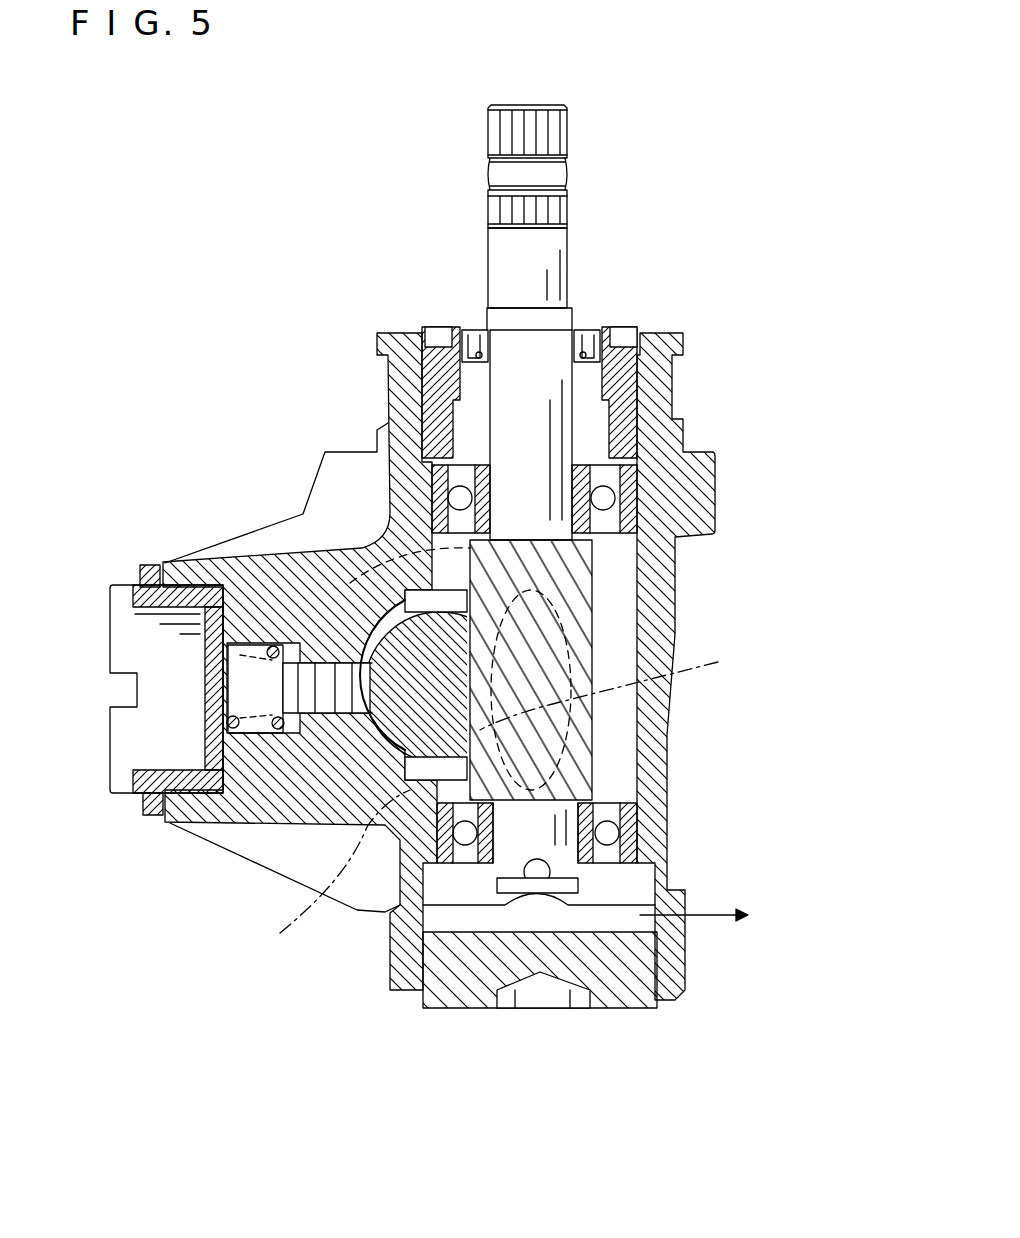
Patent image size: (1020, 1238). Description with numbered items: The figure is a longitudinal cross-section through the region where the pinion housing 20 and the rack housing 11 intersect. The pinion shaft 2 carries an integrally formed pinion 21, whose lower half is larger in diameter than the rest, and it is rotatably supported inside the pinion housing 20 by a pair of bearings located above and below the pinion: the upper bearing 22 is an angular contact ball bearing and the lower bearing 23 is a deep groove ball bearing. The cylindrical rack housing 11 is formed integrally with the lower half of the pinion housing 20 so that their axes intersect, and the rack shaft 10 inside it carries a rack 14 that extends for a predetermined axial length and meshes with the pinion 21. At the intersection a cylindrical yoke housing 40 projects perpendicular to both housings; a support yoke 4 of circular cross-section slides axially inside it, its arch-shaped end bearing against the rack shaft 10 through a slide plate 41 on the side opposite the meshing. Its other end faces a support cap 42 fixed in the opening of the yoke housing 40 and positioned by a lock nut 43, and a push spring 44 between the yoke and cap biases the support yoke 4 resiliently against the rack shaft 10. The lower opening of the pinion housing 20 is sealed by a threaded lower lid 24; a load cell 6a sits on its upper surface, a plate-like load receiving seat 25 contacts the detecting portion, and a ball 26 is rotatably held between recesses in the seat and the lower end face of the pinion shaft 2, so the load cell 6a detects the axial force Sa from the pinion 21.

The pinion shaft 2 is at (497, 270).
The support yoke 4 is at (302, 600).
The load cell 6a is at (655, 900).
The rack shaft 10 is at (240, 820).
The rack housing 11 is at (320, 876).
The rack 14 is at (555, 639).
The pinion housing 20 is at (660, 575).
The pinion 21 is at (588, 735).
The bearing 22 is at (612, 497).
The bearing 23 is at (612, 833).
The lower lid 24 is at (613, 998).
The load receiving seat 25 is at (503, 888).
The ball 26 is at (522, 872).
The yoke housing 40 is at (300, 662).
The slide plate 41 is at (372, 605).
The support cap 42 is at (118, 638).
The lock nut 43 is at (145, 567).
The push spring 44 is at (262, 643).